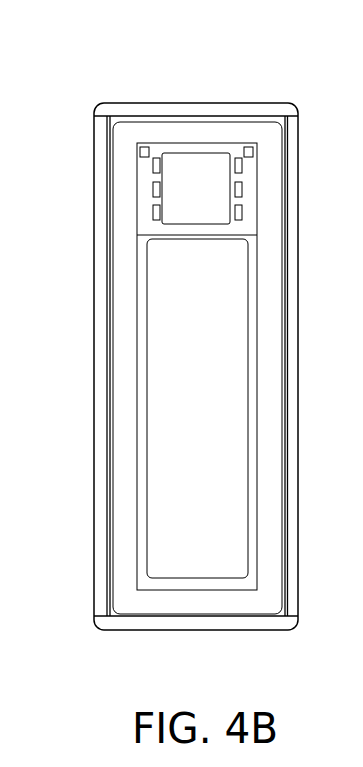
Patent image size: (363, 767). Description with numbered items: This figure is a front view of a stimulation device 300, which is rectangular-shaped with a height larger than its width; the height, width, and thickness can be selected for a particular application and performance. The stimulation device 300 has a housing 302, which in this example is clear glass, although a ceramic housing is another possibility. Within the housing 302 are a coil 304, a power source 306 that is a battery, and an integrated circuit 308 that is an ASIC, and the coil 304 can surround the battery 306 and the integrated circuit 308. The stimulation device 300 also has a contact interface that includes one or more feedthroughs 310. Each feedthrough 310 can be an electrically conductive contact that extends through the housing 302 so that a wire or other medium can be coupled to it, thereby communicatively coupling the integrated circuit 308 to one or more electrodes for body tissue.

The stimulation device 300 is at (78, 60).
The housing 302 is at (100, 546).
The coil 304 is at (121, 446).
The power source 306 is at (177, 338).
The integrated circuit 308 is at (177, 206).
The feedthrough 310 is at (144, 147).